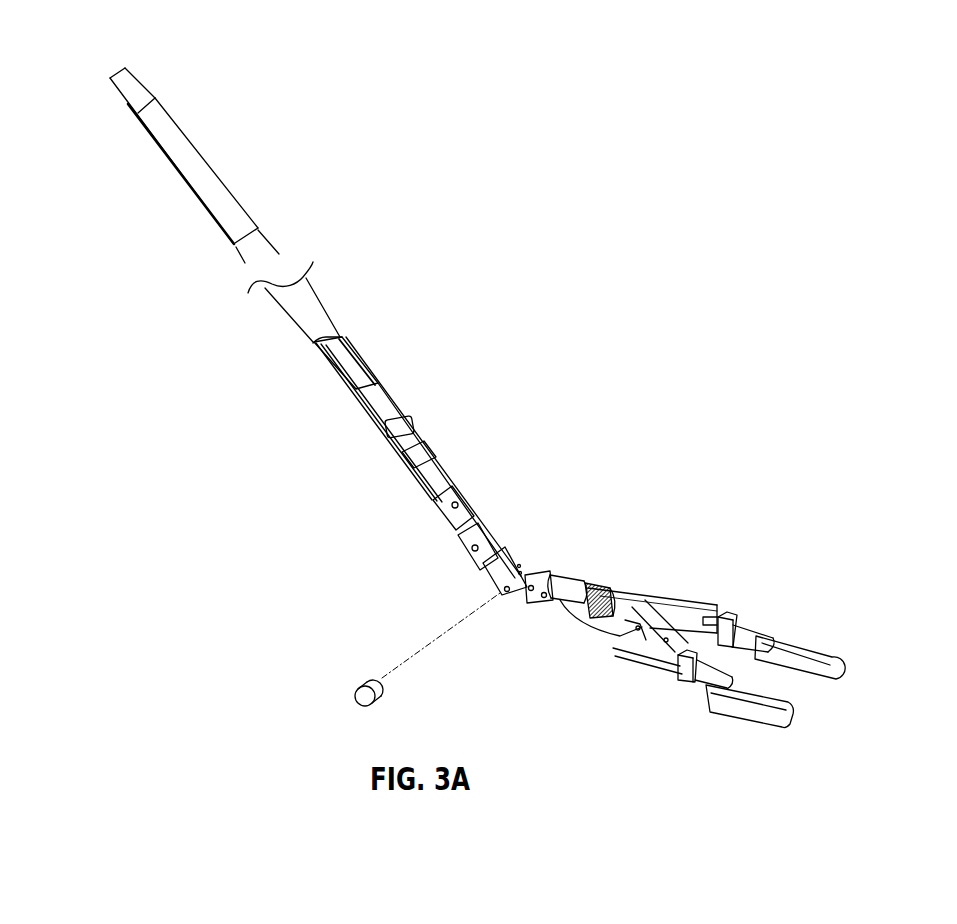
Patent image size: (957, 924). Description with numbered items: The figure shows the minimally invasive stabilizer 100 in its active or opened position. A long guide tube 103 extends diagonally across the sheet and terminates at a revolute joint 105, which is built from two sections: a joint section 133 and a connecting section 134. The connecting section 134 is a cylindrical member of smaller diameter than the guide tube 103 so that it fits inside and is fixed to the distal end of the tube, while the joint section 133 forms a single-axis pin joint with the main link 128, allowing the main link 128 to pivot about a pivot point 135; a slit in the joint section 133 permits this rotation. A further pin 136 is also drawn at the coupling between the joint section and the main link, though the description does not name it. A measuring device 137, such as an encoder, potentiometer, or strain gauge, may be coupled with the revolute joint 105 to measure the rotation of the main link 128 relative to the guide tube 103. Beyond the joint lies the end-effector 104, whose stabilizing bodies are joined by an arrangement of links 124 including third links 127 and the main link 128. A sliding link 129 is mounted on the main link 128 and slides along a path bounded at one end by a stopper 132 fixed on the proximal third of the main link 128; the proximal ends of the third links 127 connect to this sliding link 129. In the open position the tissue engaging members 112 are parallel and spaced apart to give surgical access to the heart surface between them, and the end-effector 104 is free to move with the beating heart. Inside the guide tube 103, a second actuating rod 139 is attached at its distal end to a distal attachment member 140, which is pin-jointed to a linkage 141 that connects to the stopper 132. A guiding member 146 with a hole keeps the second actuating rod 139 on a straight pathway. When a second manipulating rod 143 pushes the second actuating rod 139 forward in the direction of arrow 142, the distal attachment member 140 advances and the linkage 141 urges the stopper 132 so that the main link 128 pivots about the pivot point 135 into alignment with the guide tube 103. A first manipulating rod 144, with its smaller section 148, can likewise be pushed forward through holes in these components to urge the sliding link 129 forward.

The minimally invasive stabilizer 100 is at (546, 265).
The guide tube 103 is at (330, 313).
The end-effector 104 is at (635, 562).
The revolute joint 105 is at (472, 586).
The tissue engaging members 112 is at (800, 640).
The arrangement of links 124 is at (663, 583).
The third links 127 is at (606, 584).
The main link 128 is at (519, 575).
The sliding link 129 is at (567, 577).
The stopper 132 is at (546, 604).
The joint section 133 is at (480, 572).
The connecting section 134 is at (462, 546).
The pivot point 135 is at (508, 593).
The pin 136 is at (522, 562).
The measuring device 137 is at (366, 683).
The second actuating rod 139 is at (412, 424).
The distal attachment member 140 is at (440, 514).
The linkage 141 is at (496, 522).
The arrow 142 is at (437, 420).
The second manipulating rod 143 is at (238, 203).
The first manipulating rod 144 is at (200, 200).
The guiding member 146 is at (403, 464).
The smaller section 148 is at (372, 415).